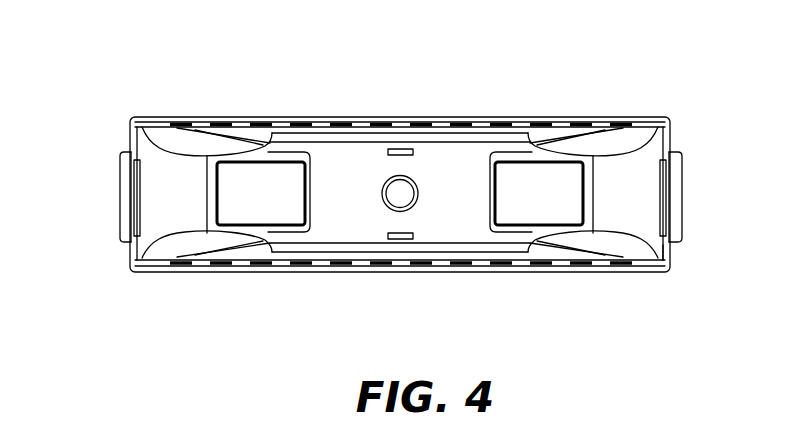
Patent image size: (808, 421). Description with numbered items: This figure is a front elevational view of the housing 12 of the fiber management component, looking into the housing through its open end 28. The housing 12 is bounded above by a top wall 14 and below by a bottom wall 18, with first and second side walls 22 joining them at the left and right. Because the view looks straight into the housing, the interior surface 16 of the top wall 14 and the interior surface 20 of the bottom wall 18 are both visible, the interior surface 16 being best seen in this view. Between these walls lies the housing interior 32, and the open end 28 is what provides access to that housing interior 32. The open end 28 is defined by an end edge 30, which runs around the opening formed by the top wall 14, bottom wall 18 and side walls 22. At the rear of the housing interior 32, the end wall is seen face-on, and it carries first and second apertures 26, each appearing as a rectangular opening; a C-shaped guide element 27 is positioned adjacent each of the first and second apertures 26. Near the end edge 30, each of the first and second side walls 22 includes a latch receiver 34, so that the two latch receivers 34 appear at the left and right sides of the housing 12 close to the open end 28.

The housing 12 is at (668, 117).
The top wall 14 is at (530, 113).
The interior surface 16 is at (320, 133).
The bottom wall 18 is at (400, 272).
The interior surface 20 is at (487, 248).
The side walls 22 is at (679, 152).
The apertures 26 is at (233, 216).
The C-shaped guide elements 27 is at (307, 212).
The open end 28 is at (670, 270).
The end edge 30 is at (642, 262).
The housing interior 32 is at (344, 232).
The latch receivers 34 is at (121, 163).